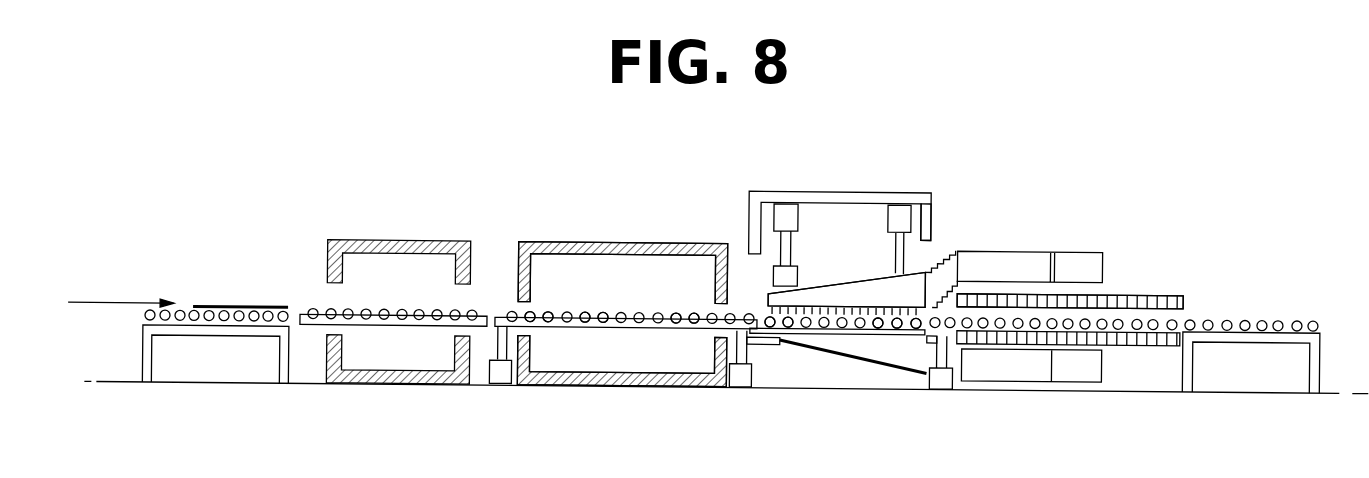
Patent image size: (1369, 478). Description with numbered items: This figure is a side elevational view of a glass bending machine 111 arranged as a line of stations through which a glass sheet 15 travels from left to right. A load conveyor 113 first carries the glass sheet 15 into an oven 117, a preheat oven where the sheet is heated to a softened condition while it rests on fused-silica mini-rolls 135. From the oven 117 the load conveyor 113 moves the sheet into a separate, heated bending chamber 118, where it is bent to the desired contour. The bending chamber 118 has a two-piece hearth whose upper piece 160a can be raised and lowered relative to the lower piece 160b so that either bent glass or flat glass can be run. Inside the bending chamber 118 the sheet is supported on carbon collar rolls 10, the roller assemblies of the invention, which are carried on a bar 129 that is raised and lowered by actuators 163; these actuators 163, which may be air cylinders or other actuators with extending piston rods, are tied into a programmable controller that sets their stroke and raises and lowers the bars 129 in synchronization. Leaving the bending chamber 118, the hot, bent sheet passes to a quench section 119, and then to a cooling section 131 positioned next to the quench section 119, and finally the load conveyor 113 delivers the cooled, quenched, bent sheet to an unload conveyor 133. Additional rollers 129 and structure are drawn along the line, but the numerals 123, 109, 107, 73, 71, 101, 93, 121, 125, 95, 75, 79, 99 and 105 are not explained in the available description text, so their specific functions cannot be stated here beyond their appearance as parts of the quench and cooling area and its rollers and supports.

The glass bending machine 111 is at (640, 157).
The load conveyor 113 is at (105, 297).
The glass sheet 15 is at (215, 304).
The heating elements / rollers 123 is at (282, 305).
The oven 117 is at (441, 238).
The fused-silica mini-rolls 135 is at (456, 307).
The upper piece of hearth 160a is at (540, 238).
The bending chamber 118 is at (660, 231).
The lower piece of hearth 160b is at (650, 381).
The bar 129 is at (630, 309).
The carbon collar rolls 10 is at (550, 307).
The actuators 163 is at (497, 345).
The quench section 119 is at (833, 178).
The frame column 109 is at (930, 188).
The actuating cylinders 107 is at (789, 245).
The upper press platen 73 is at (818, 300).
The press plate 71 is at (876, 286).
The stepped transition 101 is at (933, 263).
The upper cooling block 93 is at (973, 251).
The cooling rollers 121 is at (1035, 309).
The cooling section 131 is at (1169, 277).
The lower cooling plate 125 is at (1147, 337).
The lower cooling block 95 is at (1012, 363).
The lower press platen 75 is at (838, 348).
The press rollers 79 is at (789, 322).
The pivot block 99 is at (920, 350).
The lower support post 105 is at (951, 381).
The unload conveyor 133 is at (1238, 279).